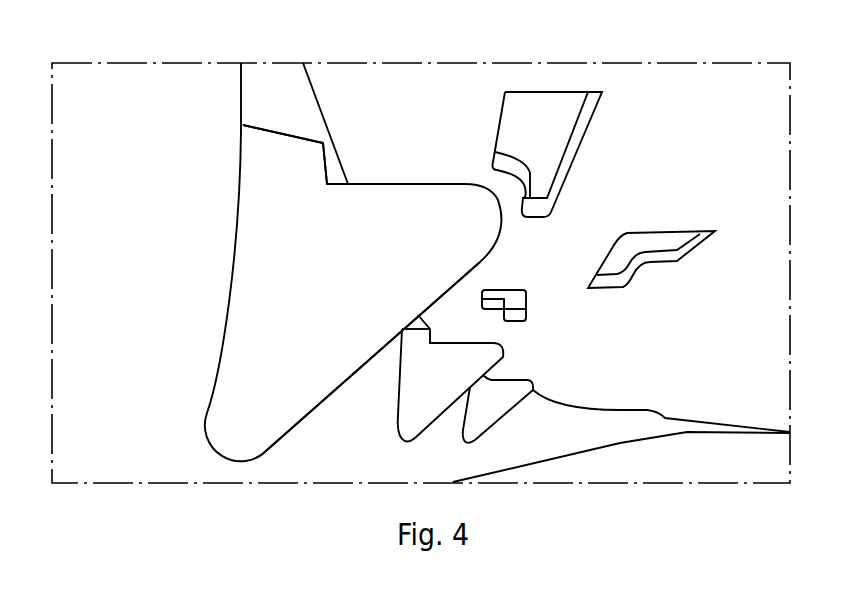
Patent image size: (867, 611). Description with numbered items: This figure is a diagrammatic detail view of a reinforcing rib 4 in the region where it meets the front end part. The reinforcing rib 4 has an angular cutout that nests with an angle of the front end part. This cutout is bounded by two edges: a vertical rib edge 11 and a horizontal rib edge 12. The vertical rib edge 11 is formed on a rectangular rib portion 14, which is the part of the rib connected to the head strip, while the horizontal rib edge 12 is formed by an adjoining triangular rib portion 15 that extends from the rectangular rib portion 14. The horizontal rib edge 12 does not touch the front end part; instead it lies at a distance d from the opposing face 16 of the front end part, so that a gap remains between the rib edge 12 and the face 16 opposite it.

The reinforcing rib 4 is at (353, 302).
The vertical rib edge 11 is at (326, 170).
The horizontal rib edge 12 is at (420, 187).
The rectangular rib portion 14 is at (273, 192).
The triangular rib portion 15 is at (275, 320).
The opposing face 16 is at (439, 179).